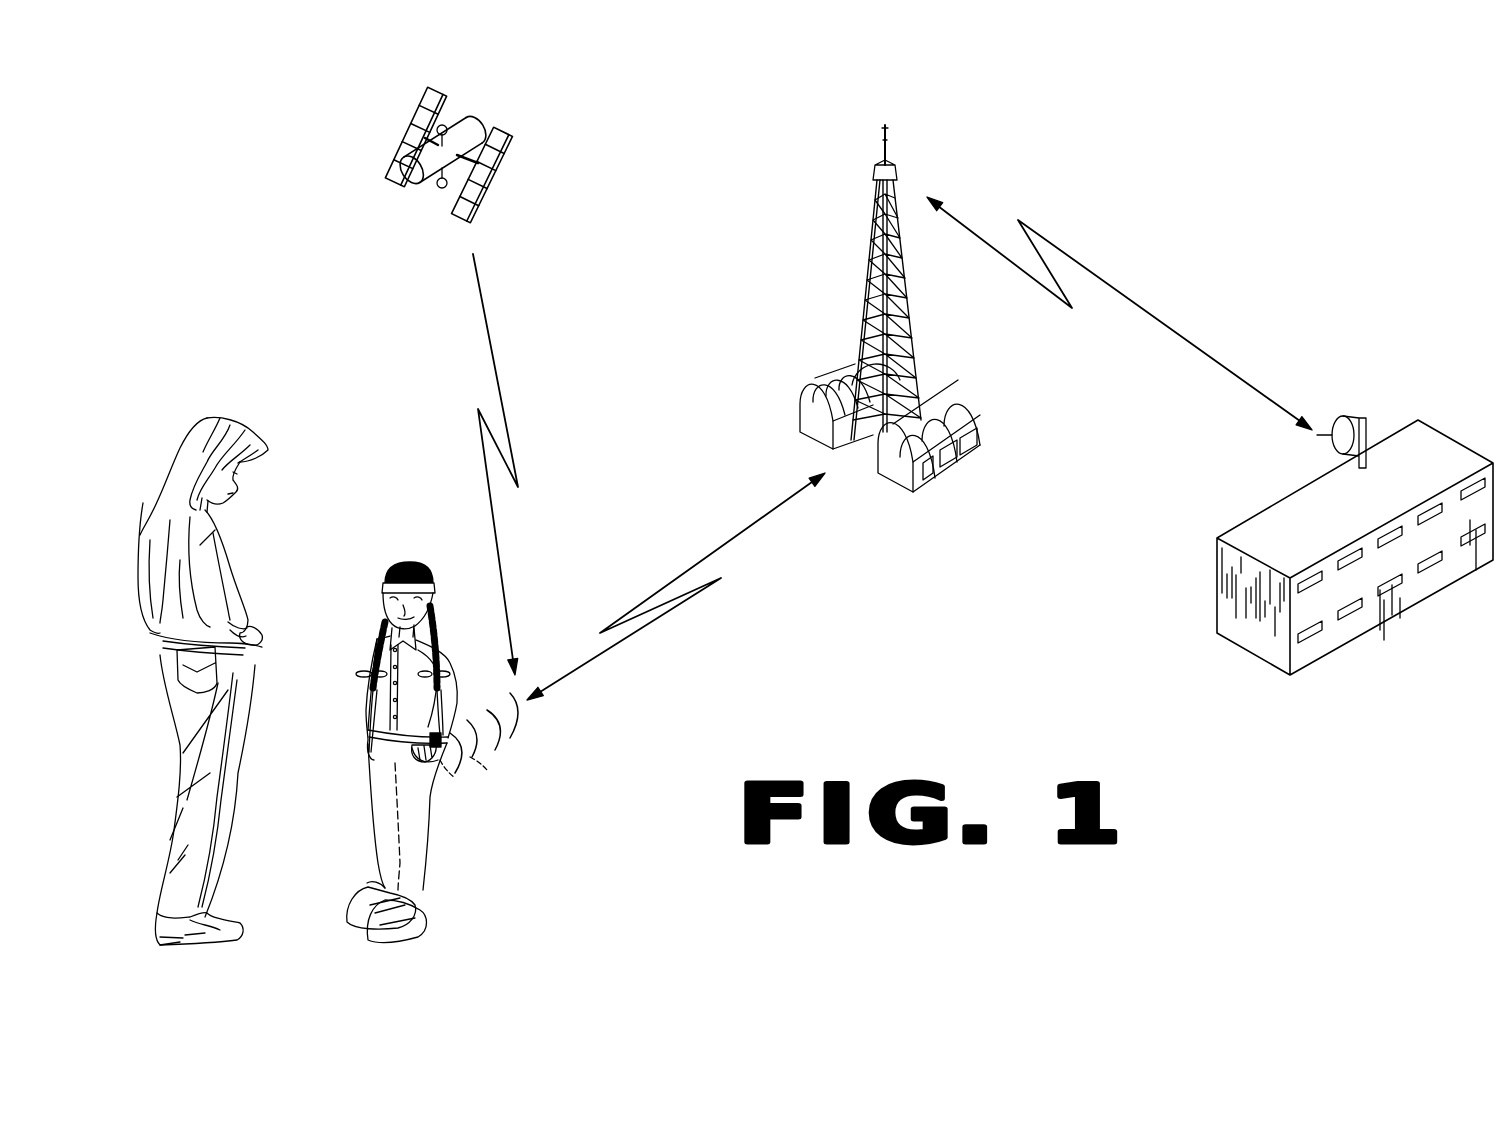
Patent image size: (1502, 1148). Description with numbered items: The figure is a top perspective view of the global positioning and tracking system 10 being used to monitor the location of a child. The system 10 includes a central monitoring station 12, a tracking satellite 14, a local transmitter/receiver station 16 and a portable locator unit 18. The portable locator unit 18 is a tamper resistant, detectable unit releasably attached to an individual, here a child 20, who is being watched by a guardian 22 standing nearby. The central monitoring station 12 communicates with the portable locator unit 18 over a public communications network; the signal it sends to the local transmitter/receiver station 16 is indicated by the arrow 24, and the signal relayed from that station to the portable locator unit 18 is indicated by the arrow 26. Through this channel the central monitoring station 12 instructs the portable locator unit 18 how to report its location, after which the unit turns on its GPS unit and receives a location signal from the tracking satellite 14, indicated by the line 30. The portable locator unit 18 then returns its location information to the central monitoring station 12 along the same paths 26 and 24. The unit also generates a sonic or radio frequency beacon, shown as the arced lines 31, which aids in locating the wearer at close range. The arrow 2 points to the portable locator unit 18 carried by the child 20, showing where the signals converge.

The communication signal between device and station 2 is at (492, 760).
The global positioning and tracking system 10 is at (728, 335).
The central monitoring station 12 is at (1418, 438).
The tracking satellite 14 is at (511, 147).
The local transmitter/receiver station 16 is at (917, 395).
The portable locator unit 18 is at (442, 746).
The child wearing tracking device 20 is at (377, 633).
The guardian of child 22 is at (207, 418).
The line indicating transmission between central station and relay station 24 is at (1168, 323).
The line indicating transmission between relay station and locator unit 26 is at (699, 563).
The line indicating transmission of location signal from satellite to locator unit 30 is at (496, 378).
The beacon 31 is at (511, 722).